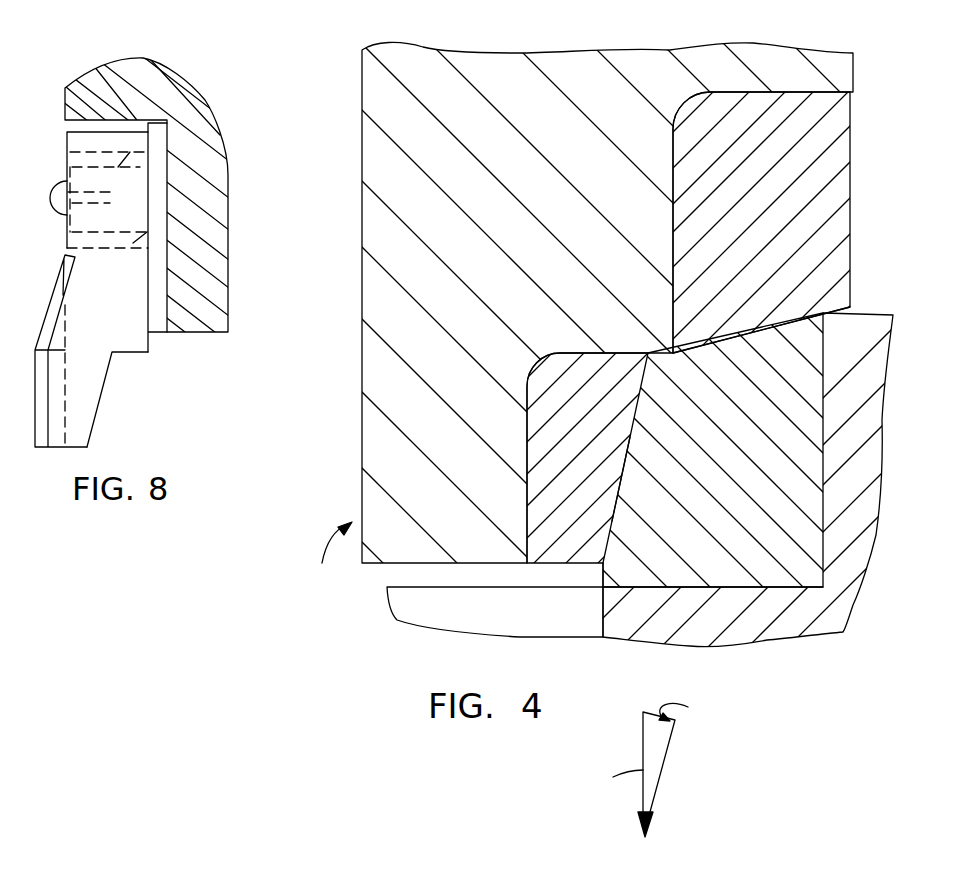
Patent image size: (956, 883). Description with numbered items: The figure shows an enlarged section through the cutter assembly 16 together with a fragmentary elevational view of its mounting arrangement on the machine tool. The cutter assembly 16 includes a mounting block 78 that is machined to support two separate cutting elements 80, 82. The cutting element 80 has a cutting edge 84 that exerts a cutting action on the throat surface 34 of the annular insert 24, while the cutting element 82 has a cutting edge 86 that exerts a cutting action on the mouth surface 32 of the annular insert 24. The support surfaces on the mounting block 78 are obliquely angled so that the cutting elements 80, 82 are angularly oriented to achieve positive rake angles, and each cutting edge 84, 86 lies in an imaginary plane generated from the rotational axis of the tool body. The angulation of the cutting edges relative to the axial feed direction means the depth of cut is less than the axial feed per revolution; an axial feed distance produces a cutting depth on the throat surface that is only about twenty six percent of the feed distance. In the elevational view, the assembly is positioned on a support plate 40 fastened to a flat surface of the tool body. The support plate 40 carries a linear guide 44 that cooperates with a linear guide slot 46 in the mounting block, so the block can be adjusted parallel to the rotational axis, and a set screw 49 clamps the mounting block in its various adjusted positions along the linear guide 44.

In FIG. 4, the cutter assembly 16 is at (331, 564).
In FIG. 4, the annular insert 24 is at (772, 580).
In FIG. 4, the mouth surface 32 is at (807, 295).
In FIG. 4, the throat surface 34 is at (612, 512).
In FIG. 8, the support plate 40 is at (170, 283).
In FIG. 8, the linear guide 44 is at (130, 152).
In FIG. 8, the linear guide slot 46 is at (147, 232).
In FIG. 8, the set screw 49 is at (113, 197).
In FIG. 4, the mounting block 78 is at (628, 65).
In FIG. 8, the mounting block 78 is at (133, 307).
In FIG. 4, the cutting element 80 is at (520, 484).
In FIG. 8, the cutting element 80 is at (45, 395).
In FIG. 4, the cutting element 82 is at (815, 175).
In FIG. 8, the cutting element 82 is at (63, 305).
In FIG. 4, the cutting edge 84 is at (622, 470).
In FIG. 4, the cutting edge 86 is at (775, 328).